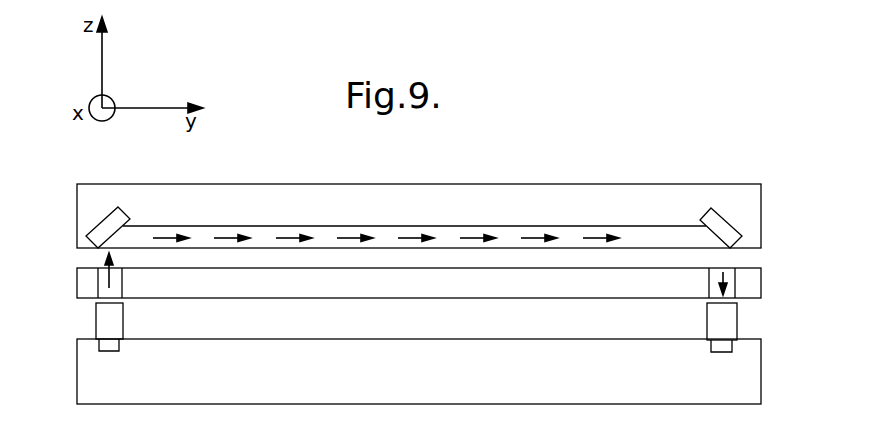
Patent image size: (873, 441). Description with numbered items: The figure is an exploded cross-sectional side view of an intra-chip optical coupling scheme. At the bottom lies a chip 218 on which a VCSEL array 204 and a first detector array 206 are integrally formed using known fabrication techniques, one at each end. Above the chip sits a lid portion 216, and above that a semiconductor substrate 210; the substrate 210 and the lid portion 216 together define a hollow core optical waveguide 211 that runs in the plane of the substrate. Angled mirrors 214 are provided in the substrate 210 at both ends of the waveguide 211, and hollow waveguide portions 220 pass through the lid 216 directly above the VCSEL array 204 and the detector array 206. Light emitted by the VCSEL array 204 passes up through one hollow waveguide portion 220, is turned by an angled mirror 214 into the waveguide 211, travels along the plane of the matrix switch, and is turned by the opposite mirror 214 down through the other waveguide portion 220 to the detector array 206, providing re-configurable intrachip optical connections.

The VCSEL array 204 is at (96, 319).
The first detector array 206 is at (737, 320).
The semiconductor substrate 210 is at (761, 203).
The hollow core optical waveguide 211 is at (654, 233).
The angled mirror 214 is at (108, 224).
The lid portion 216 is at (761, 277).
The chip 218 is at (761, 368).
The hollow waveguide portion 220 is at (103, 283).